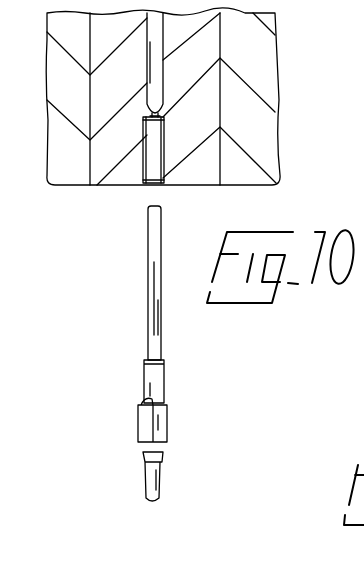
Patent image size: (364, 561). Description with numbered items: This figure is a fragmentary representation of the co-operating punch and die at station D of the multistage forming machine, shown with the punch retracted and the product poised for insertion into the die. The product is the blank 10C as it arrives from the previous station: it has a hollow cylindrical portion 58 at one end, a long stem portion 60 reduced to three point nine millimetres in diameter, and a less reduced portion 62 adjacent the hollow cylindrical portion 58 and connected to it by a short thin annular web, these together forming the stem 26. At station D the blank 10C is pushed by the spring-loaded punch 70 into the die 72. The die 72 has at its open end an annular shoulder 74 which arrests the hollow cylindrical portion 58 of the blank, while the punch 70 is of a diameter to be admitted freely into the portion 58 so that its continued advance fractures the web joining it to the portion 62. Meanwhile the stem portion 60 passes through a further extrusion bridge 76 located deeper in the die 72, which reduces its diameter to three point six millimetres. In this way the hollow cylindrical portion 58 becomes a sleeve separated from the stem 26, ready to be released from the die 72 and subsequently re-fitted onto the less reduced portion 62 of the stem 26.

The die 72 is at (203, 42).
The further extrusion bridge 76 is at (153, 115).
The annular shoulder 74 is at (147, 188).
The stem portion 60 is at (153, 218).
The stem 26 is at (190, 327).
The less reduced portion 62 is at (160, 370).
The hollow cylindrical portion 58 is at (140, 418).
The spring-loaded punch 70 is at (142, 462).
The blank 10C is at (116, 340).
The station D is at (98, 237).